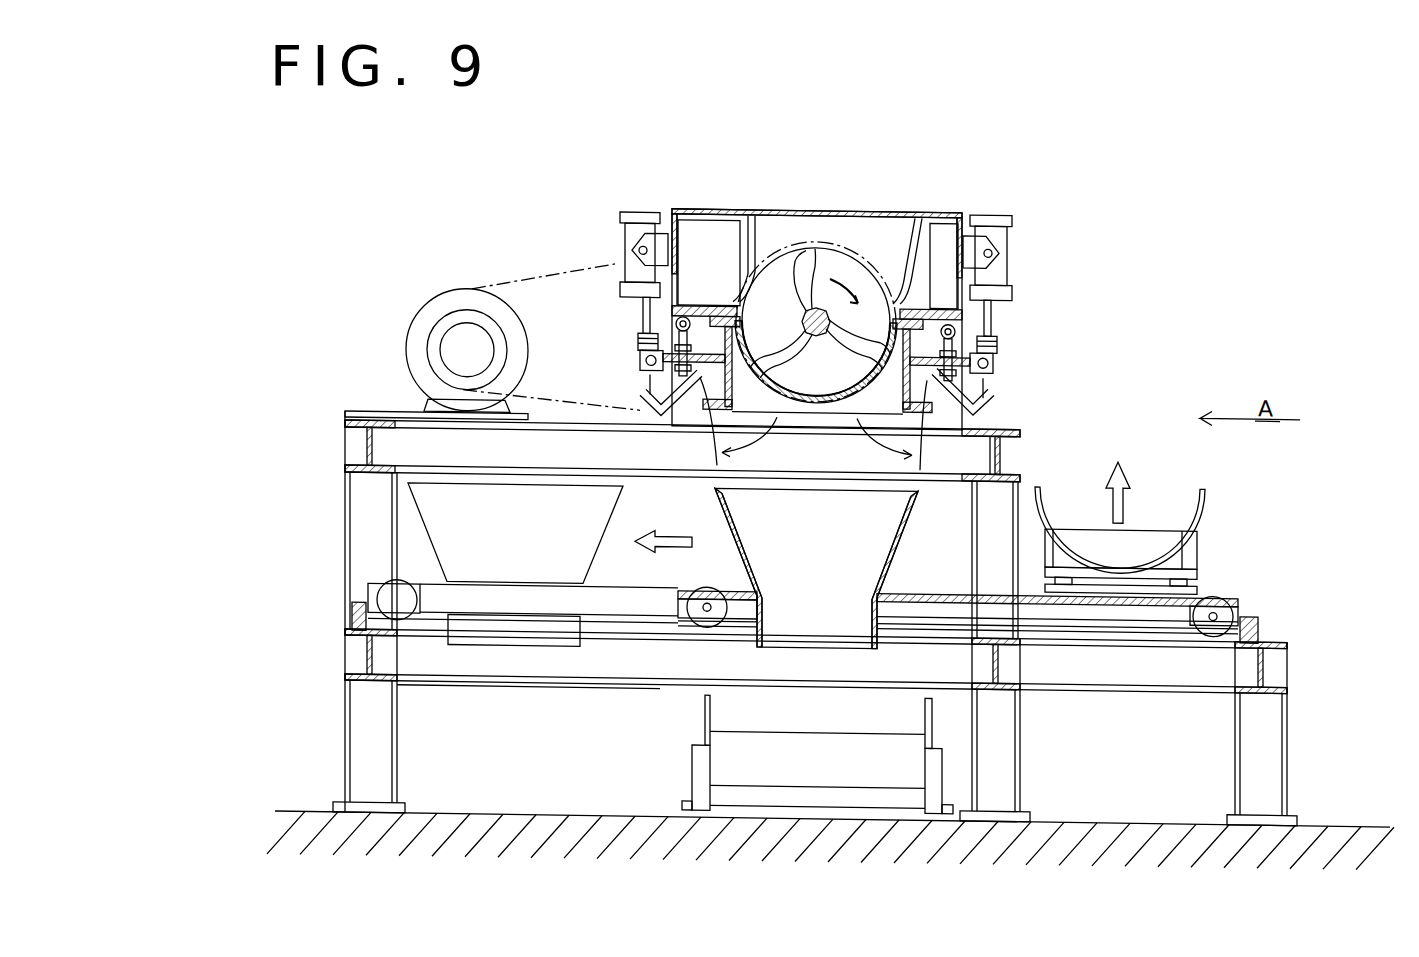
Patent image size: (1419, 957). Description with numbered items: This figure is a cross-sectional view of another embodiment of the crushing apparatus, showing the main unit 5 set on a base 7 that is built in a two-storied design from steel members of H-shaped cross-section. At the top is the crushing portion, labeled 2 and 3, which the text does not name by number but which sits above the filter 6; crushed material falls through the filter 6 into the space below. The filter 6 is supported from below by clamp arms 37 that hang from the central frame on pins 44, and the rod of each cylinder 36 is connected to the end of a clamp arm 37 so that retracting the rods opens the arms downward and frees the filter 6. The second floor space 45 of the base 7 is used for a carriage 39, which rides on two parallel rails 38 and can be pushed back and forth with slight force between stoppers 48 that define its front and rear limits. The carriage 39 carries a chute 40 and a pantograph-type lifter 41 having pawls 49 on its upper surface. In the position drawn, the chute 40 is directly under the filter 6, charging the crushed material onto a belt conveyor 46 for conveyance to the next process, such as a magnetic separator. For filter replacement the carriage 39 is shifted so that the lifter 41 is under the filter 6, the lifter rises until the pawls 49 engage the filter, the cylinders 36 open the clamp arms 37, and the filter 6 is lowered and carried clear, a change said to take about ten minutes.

The housing 2 is at (890, 233).
The rotary drum 3 is at (820, 262).
The main unit 5 is at (1030, 354).
The filter 6 is at (758, 262).
The base 7 is at (1287, 664).
The cylinders 36 is at (618, 241).
The clamp arms 37 is at (713, 442).
The rails 38 is at (658, 619).
The carriage 39 is at (1237, 587).
The chute 40 is at (825, 636).
The lifter 41 is at (1197, 568).
The pins 44 is at (676, 320).
The second floor space 45 is at (490, 538).
The belt conveyor 46 is at (790, 773).
The stoppers 48 is at (352, 607).
The pawls 49 is at (1197, 535).